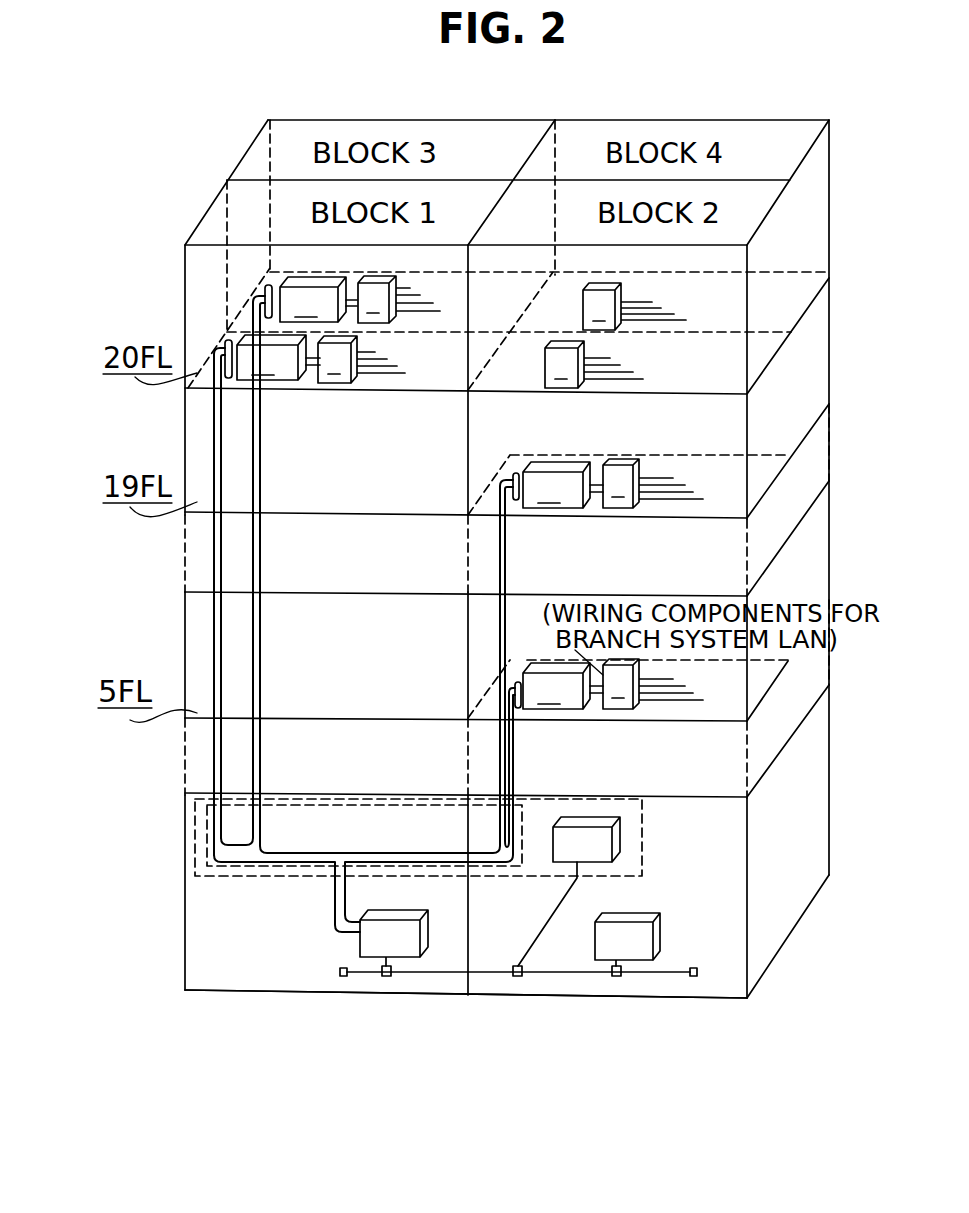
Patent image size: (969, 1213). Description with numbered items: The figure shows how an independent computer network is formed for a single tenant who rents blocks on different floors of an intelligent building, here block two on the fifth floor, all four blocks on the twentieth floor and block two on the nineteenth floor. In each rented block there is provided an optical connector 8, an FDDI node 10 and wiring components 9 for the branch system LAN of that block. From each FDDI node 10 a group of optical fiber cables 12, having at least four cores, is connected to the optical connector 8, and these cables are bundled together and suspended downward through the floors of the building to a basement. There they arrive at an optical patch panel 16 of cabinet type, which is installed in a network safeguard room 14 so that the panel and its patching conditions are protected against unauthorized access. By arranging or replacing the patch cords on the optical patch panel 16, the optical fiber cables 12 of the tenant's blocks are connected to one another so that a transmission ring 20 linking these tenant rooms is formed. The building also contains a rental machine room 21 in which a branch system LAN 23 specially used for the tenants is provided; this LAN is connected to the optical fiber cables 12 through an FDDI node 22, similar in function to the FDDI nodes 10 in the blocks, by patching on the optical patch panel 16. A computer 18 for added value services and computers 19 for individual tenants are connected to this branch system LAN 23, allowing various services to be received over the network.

The optical connector 8 is at (260, 291).
The wiring components for branch system LAN 9 is at (510, 492).
The FDDI node 10 is at (420, 493).
The group of optical fiber cables 12 is at (213, 452).
The network safeguard room 14 is at (195, 863).
The optical patch panel (cabinet type) 16 is at (207, 838).
The computer for added value services 18 is at (606, 843).
The computers for individual tenants 19 is at (632, 952).
The transmission ring 20 is at (513, 762).
The rental machine room 21 is at (200, 925).
The FDDI node 22 is at (378, 943).
The branch system LAN in rental machine room 23 is at (482, 977).